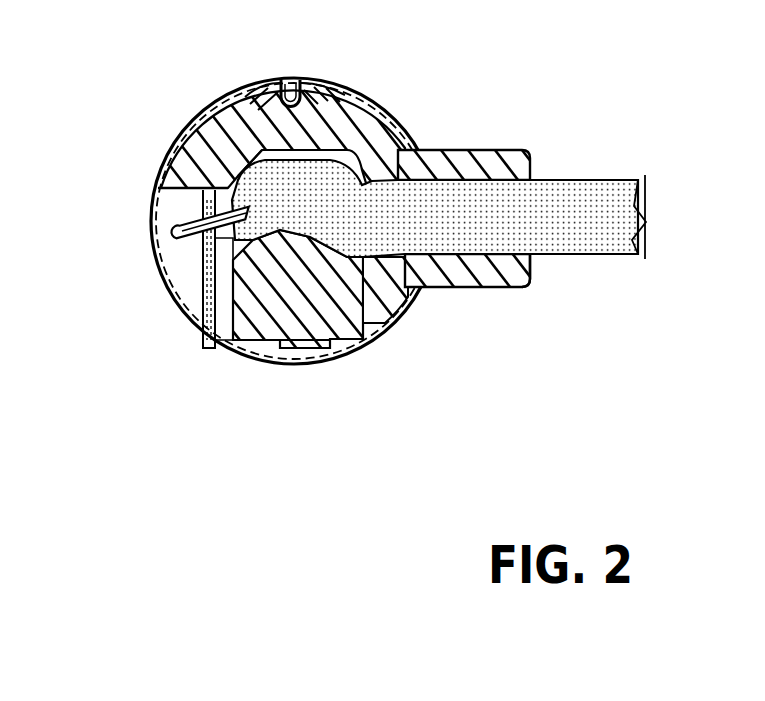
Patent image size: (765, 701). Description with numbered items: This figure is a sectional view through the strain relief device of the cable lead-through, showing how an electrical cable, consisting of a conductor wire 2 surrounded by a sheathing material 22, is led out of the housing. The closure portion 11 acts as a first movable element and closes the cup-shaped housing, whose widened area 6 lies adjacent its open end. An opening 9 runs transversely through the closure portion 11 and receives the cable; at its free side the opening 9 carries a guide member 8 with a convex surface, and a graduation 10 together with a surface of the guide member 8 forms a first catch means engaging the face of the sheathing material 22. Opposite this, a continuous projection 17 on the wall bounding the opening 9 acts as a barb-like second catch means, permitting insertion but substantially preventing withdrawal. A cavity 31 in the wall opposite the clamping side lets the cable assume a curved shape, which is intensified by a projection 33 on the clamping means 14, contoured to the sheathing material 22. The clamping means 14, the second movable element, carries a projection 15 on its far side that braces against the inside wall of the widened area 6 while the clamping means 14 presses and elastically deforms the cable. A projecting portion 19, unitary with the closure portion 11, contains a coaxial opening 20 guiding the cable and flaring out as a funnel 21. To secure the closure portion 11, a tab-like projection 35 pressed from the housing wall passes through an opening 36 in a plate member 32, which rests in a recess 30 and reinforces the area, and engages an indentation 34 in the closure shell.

The conductor wire 2 is at (178, 230).
The widened area 6 is at (180, 150).
The guide member 8 is at (212, 340).
The opening 9 is at (166, 276).
The graduation 10 is at (175, 168).
The closure portion 11 is at (392, 322).
The clamping means 14 is at (318, 350).
The projection 15 is at (285, 349).
The continuous projection 17 is at (402, 124).
The projecting portion 19 is at (467, 272).
The opening 20 is at (442, 257).
The funnel 21 is at (542, 257).
The sheathing material 22 is at (578, 188).
The recess 30 is at (372, 96).
The cavity 31 is at (200, 127).
The plate member 32 is at (255, 98).
The projection 33 is at (237, 352).
The indentation 34 is at (281, 85).
The tab-like projection 35 is at (289, 82).
The opening 36 is at (318, 84).